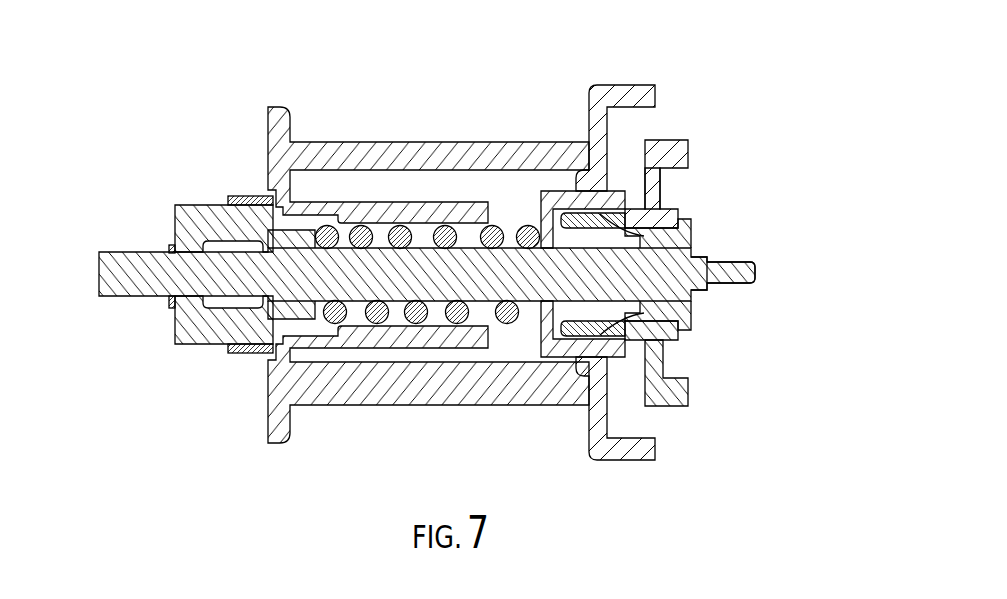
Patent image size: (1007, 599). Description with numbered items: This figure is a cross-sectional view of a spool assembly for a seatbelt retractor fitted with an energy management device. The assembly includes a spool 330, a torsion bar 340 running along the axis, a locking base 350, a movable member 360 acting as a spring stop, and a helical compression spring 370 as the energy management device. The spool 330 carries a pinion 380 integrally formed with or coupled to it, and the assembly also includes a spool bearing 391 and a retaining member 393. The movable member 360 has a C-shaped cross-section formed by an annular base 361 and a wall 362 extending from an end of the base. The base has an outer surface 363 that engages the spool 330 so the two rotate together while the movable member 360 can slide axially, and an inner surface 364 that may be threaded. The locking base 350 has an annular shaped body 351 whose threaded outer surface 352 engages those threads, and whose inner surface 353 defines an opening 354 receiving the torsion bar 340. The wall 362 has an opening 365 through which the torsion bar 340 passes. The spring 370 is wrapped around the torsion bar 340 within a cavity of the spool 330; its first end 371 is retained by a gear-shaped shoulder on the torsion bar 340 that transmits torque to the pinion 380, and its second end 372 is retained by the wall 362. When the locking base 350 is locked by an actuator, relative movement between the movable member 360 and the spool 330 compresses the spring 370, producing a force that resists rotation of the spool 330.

The spool 330 is at (392, 142).
The torsion bar 340 is at (117, 251).
The locking base 350 is at (678, 406).
The annular shaped body 351 is at (622, 320).
The threaded outer surface 352 is at (602, 341).
The inner surface 353 is at (645, 281).
The opening 354 is at (671, 262).
The movable member 360 is at (577, 190).
The annular base 361 is at (650, 198).
The wall 362 is at (541, 338).
The outer surface 363 is at (618, 191).
The inner surface 364 is at (678, 258).
The opening 365 is at (572, 290).
The helical compression spring 370 is at (357, 324).
The first end 371 is at (317, 307).
The second end 372 is at (527, 225).
The pinion 380 is at (172, 338).
The spool bearing 391 is at (242, 196).
The retaining member 393 is at (170, 305).